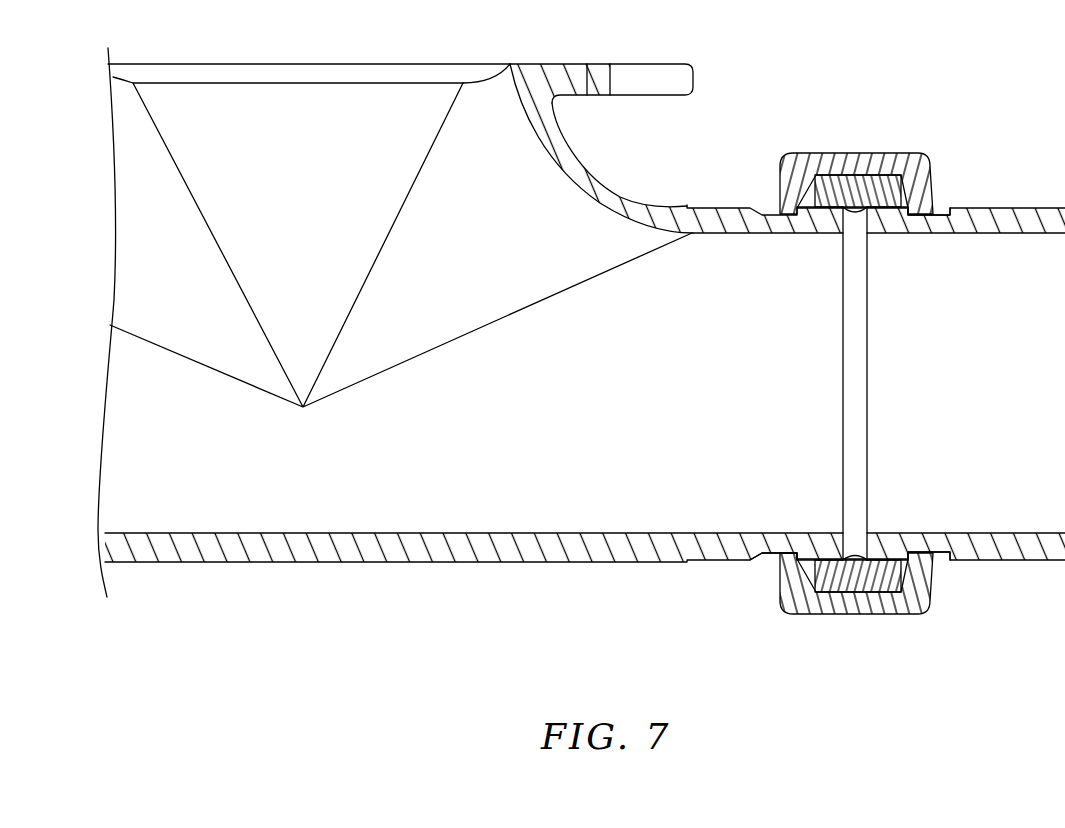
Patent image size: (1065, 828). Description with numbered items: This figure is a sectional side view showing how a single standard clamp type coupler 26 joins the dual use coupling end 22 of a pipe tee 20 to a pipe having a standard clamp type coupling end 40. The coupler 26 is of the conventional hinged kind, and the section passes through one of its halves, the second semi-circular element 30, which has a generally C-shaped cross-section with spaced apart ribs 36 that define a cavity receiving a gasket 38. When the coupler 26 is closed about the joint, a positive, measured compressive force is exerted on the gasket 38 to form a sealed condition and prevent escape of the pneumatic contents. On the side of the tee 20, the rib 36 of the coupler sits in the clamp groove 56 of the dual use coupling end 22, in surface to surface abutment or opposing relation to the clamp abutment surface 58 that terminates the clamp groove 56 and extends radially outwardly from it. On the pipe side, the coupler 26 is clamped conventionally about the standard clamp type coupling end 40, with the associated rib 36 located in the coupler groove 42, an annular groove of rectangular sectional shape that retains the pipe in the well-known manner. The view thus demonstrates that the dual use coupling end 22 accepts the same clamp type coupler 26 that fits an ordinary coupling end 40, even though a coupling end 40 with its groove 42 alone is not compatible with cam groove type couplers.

The pipe tee 20 is at (294, 566).
The dual use coupling end 22 is at (740, 205).
The standard clamp type coupler 26 is at (776, 615).
The second semi-circular element 30 is at (877, 612).
The rib 36 is at (779, 192).
The gasket 38 is at (847, 182).
The standard clamp type coupling end 40 is at (981, 207).
The coupler groove 42 is at (938, 207).
The clamp groove 56 is at (750, 556).
The clamp abutment surface 58 is at (786, 553).